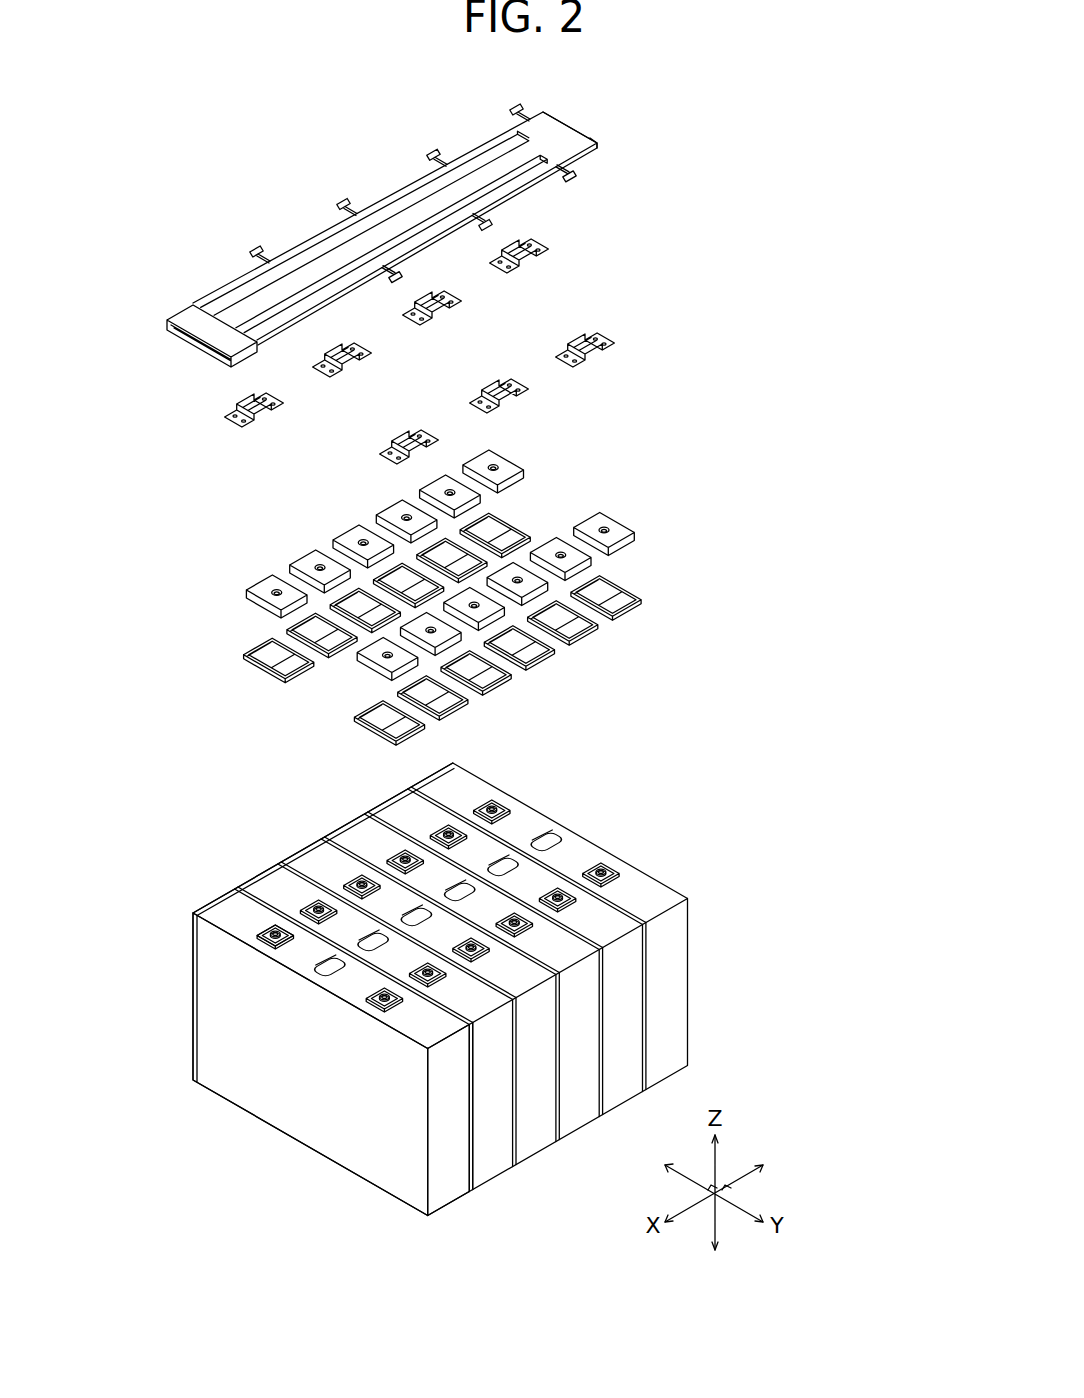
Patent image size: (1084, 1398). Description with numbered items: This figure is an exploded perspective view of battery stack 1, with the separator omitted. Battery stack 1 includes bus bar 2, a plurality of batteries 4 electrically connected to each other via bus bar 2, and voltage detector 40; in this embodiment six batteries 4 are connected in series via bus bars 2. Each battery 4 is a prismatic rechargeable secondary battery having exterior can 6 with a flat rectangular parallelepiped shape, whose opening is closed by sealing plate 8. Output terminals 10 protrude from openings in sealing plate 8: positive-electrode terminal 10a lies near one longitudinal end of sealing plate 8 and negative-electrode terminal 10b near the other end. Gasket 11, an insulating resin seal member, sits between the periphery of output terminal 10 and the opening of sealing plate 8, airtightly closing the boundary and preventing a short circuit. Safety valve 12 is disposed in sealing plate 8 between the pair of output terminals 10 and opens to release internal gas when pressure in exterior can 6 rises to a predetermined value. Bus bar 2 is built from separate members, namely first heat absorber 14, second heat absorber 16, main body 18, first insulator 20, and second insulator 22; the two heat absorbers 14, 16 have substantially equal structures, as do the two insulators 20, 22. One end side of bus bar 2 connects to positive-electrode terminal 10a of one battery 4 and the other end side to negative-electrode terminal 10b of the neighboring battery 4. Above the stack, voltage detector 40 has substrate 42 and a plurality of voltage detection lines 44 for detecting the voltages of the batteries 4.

The battery stack 1 is at (412, 1019).
The bus bar 2 is at (491, 492).
The battery 4 is at (261, 1098).
The exterior can 6 is at (452, 1182).
The sealing plate 8 is at (222, 905).
The output terminal 10 is at (402, 1007).
The positive-electrode terminal 10a is at (276, 925).
The negative-electrode terminal 10b is at (388, 1012).
The gasket 11 is at (285, 922).
The safety valve 12 is at (331, 976).
The first heat absorber 14 is at (565, 546).
The second heat absorber 16 is at (626, 528).
The main body 18 is at (636, 360).
The first insulator 20 is at (603, 640).
The second insulator 22 is at (641, 597).
The voltage detector 40 is at (403, 210).
The substrate 42 is at (594, 131).
The voltage detection line 44 is at (527, 143).